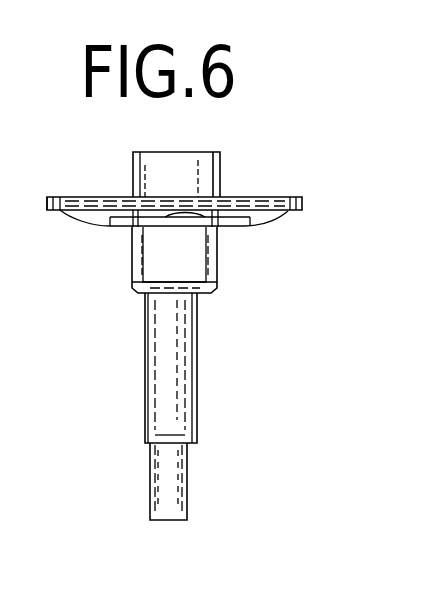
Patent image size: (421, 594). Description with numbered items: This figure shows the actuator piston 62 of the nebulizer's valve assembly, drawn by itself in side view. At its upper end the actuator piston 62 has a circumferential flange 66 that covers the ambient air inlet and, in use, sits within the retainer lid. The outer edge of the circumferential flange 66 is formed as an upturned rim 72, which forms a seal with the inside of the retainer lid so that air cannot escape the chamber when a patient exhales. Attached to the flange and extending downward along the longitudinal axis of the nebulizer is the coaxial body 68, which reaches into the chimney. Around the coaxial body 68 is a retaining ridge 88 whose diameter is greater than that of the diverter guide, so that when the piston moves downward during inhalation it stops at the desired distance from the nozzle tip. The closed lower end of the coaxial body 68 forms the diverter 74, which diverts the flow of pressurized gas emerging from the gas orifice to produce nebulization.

The actuator piston 62 is at (309, 199).
The circumferential flange 66 is at (252, 222).
The coaxial body 68 is at (218, 265).
The upturned rim 72 is at (57, 197).
The retaining ridge 88 is at (197, 440).
The diverter 74 is at (180, 520).